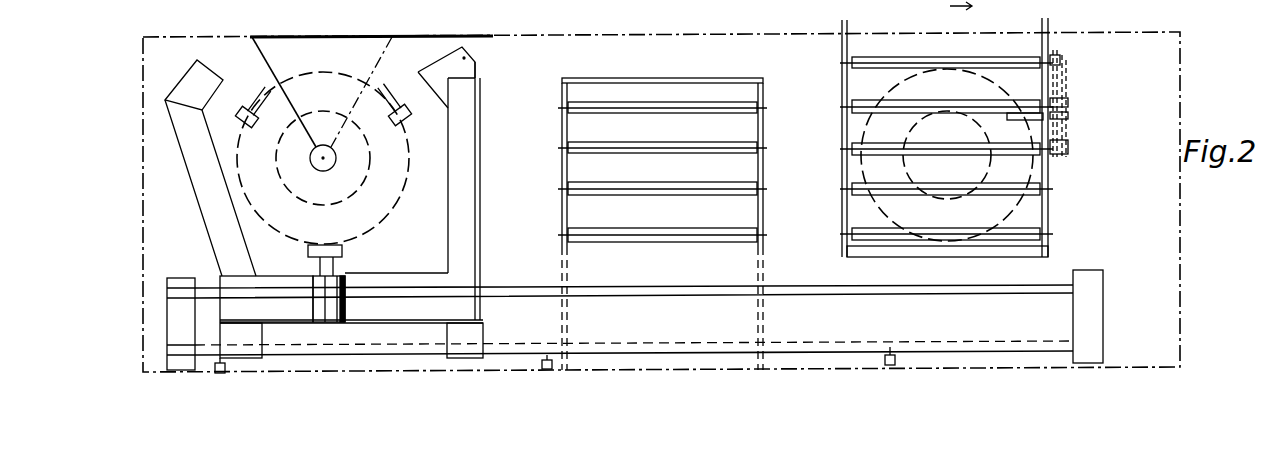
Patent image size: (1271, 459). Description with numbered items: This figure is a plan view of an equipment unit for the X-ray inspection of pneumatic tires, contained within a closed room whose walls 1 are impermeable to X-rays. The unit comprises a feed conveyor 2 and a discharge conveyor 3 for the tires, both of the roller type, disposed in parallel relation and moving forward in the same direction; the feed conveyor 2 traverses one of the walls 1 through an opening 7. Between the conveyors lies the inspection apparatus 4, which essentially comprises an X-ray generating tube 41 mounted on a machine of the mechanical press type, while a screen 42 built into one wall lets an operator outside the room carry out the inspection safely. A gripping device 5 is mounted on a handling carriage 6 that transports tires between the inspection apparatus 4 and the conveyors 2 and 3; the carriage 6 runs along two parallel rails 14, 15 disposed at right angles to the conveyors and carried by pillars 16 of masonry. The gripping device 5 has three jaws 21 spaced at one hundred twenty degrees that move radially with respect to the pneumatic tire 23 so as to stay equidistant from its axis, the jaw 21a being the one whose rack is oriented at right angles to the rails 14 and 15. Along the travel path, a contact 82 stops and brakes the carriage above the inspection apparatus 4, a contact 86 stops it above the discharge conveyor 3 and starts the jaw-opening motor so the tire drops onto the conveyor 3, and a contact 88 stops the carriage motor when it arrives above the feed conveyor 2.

The walls 1 is at (1190, 86).
The feed conveyor 2 is at (1084, 130).
The discharge conveyor 3 is at (687, 76).
The inspection apparatus 4 is at (391, 86).
The gripping device 5 is at (486, 57).
The handling carriage 6 is at (497, 269).
The opening 7 is at (972, 35).
The rail 14 is at (818, 348).
The rail 15 is at (787, 292).
The pillars 16 is at (175, 328).
The jaws 21 is at (244, 120).
The jaw 21a is at (325, 252).
The pneumatic tire 23 is at (387, 218).
The X-ray generating tube 41 is at (320, 168).
The screen 42 is at (337, 37).
The contact 82 is at (226, 368).
The contact 86 is at (545, 358).
The contact 88 is at (896, 360).